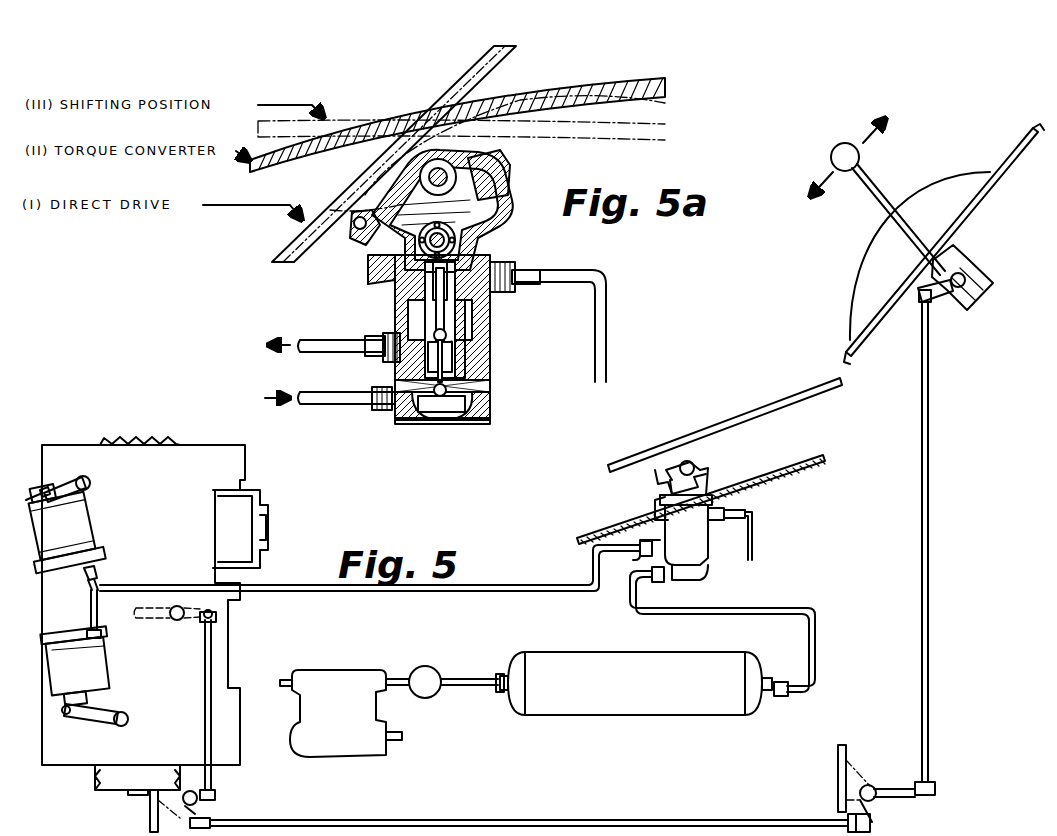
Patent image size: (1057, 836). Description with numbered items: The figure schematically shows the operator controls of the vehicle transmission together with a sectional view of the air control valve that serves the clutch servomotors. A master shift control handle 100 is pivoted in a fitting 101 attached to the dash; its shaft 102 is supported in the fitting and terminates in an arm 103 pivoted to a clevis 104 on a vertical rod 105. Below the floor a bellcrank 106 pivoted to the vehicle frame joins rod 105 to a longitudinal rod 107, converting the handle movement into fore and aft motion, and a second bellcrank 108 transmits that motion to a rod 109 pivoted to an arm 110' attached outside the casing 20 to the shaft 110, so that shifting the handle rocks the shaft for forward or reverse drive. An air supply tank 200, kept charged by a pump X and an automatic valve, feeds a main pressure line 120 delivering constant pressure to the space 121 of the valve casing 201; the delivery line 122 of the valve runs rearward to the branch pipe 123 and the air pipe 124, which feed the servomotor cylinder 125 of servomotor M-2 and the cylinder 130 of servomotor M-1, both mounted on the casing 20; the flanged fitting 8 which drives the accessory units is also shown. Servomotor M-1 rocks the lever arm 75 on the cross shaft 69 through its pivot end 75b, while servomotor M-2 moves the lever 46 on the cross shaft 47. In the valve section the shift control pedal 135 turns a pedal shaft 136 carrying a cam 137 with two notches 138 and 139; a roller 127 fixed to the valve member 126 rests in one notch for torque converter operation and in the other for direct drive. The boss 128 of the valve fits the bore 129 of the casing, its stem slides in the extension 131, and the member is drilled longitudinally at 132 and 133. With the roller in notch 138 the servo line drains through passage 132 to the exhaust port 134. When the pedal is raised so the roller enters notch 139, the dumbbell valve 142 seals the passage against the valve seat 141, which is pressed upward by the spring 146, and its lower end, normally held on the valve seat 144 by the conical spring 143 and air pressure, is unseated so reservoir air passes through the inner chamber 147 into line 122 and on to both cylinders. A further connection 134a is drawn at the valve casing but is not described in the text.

In FIG. 5A, the shift control pedal 135 is at (520, 112).
In FIG. 5, the shift control pedal 135 is at (782, 410).
In FIG. 5A, the pedal shaft 136 is at (468, 172).
In FIG. 5, the pedal shaft 136 is at (698, 468).
In FIG. 5A, the notch 138 is at (472, 205).
In FIG. 5A, the cam 137 is at (465, 235).
In FIG. 5A, the roller 127 is at (498, 258).
In FIG. 5A, the bore 129 is at (496, 270).
In FIG. 5A, the notch 139 is at (365, 236).
In FIG. 5A, the boss 128 is at (402, 264).
In FIG. 5A, the longitudinal drilling 133 is at (424, 278).
In FIG. 5A, the valve member 126 is at (424, 292).
In FIG. 5A, the longitudinal passage 132 is at (418, 312).
In FIG. 5A, the extension 131 is at (472, 316).
In FIG. 5A, the exhaust port 134 is at (505, 292).
In FIG. 5A, the valve seat 141 is at (470, 338).
In FIG. 5A, the spring 146 is at (478, 350).
In FIG. 5A, the valve casing 201 is at (482, 362).
In FIG. 5, the valve casing 201 is at (700, 512).
In FIG. 5A, the conical spring 143 is at (478, 378).
In FIG. 5A, the valve seat 144 is at (468, 397).
In FIG. 5A, the dumbbell valve 142 is at (415, 420).
In FIG. 5A, the space 121 is at (445, 420).
In FIG. 5A, the inner chamber 147 is at (375, 358).
In FIG. 5A, the delivery line 122 is at (316, 346).
In FIG. 5, the delivery line 122 is at (560, 590).
In FIG. 5A, the main pressure line 120 is at (310, 397).
In FIG. 5, the main pressure line 120 is at (806, 610).
In FIG. 5A, the vent pipe 134a is at (578, 278).
In FIG. 5, the vent pipe 134a is at (756, 534).
In FIG. 5, the master shift control handle 100 is at (884, 188).
In FIG. 5, the clevis 104 is at (915, 292).
In FIG. 5, the fitting 101 is at (976, 255).
In FIG. 5, the shaft 102 is at (970, 288).
In FIG. 5, the arm 103 is at (975, 305).
In FIG. 5, the vertical rod 105 is at (933, 404).
In FIG. 5, the bellcrank 106 is at (891, 788).
In FIG. 5, the longitudinal rod 107 is at (746, 822).
In FIG. 5, the bellcrank 108 is at (208, 805).
In FIG. 5, the rod 109 is at (230, 670).
In FIG. 5, the flanged fitting 8 is at (112, 775).
In FIG. 5, the casing 20 is at (243, 505).
In FIG. 5, the servomotor M-1 is at (80, 519).
In FIG. 5, the cylinder 130 is at (34, 514).
In FIG. 5, the lever arm 75 is at (60, 490).
In FIG. 5, the cross shaft 69 is at (92, 482).
In FIG. 5, the pivot end 75b is at (46, 492).
In FIG. 5, the air pipe 124 is at (98, 572).
In FIG. 5, the branch pipe 123 is at (92, 605).
In FIG. 5, the servomotor M-2 is at (62, 654).
In FIG. 5, the servomotor cylinder 125 is at (96, 666).
In FIG. 5, the lever 46 is at (98, 710).
In FIG. 5, the cross shaft 47 is at (129, 720).
In FIG. 5, the shaft 110 is at (169, 589).
In FIG. 5, the arm 110' is at (232, 604).
In FIG. 5, the air supply tank 200 is at (538, 660).
In FIG. 5, the pump X is at (334, 692).